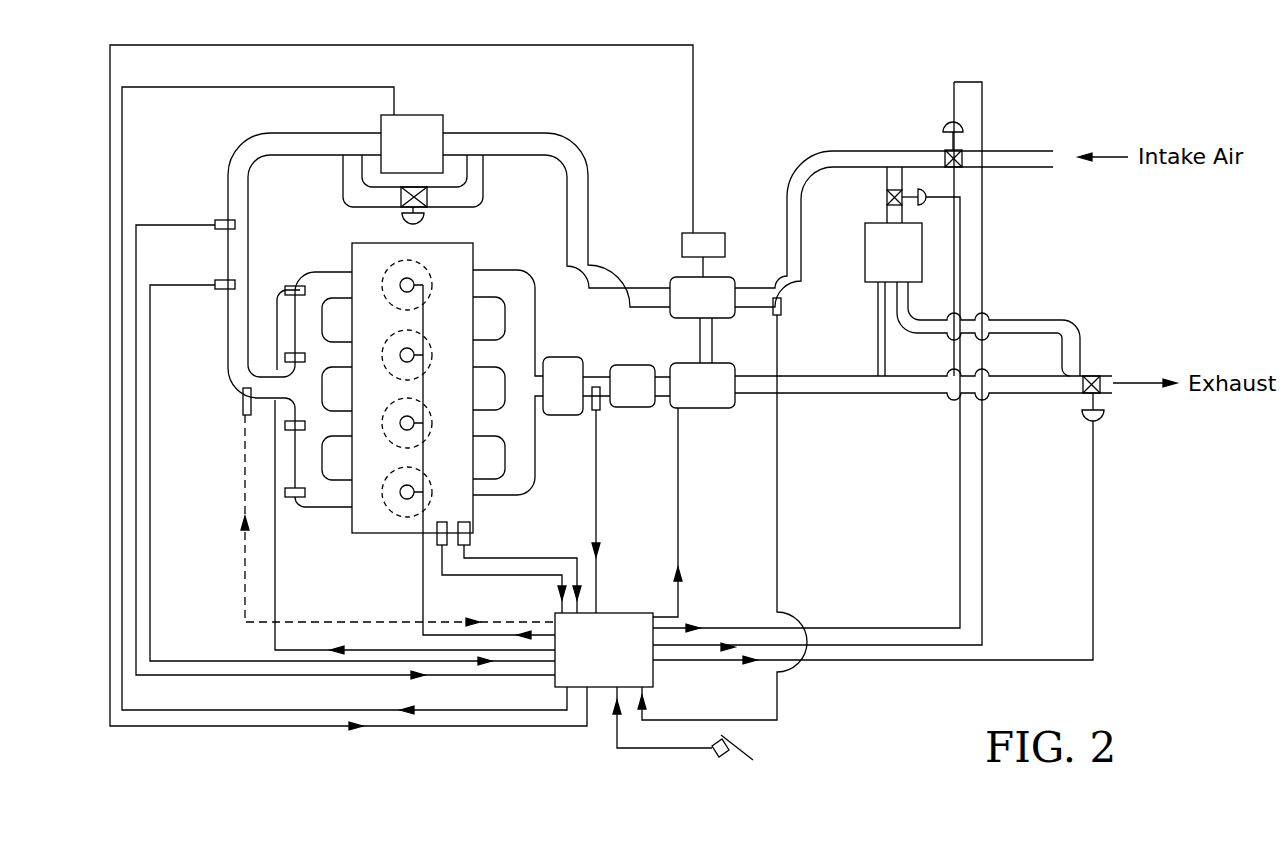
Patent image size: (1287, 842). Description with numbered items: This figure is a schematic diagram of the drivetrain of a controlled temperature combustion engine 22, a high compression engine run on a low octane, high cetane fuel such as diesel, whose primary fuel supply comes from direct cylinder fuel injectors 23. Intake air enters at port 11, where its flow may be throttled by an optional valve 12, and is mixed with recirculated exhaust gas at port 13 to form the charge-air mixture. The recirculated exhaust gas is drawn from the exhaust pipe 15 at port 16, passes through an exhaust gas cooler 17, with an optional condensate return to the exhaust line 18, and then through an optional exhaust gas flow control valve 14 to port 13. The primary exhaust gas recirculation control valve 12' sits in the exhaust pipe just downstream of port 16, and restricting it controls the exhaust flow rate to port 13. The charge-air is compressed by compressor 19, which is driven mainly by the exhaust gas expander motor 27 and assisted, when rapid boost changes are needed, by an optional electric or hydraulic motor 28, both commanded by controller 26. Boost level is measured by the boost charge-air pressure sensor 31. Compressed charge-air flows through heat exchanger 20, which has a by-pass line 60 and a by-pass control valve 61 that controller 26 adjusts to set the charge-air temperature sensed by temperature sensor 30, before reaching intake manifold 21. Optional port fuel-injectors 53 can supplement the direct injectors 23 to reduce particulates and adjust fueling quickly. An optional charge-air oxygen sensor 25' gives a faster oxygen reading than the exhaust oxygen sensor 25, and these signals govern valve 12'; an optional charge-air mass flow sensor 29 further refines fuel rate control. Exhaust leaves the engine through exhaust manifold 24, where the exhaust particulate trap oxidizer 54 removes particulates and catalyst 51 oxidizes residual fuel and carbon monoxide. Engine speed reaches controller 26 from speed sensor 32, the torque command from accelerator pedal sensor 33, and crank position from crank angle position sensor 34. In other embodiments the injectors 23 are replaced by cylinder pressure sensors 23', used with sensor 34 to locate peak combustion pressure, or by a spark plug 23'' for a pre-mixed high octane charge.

The intake air port 11 is at (1055, 152).
The throttle valve 12 is at (934, 103).
The exhaust gas recirculation control valve 12' is at (922, 528).
The mixing port 13 is at (895, 170).
The exhaust gas flow control valve 14 is at (933, 203).
The exhaust line 15 is at (1020, 393).
The exhaust port 16 is at (1080, 335).
The exhaust gas cooler 17 is at (867, 250).
The exhaust line 18 is at (880, 350).
The compressor 19 is at (685, 288).
The heat exchanger 20 is at (430, 115).
The intake manifold 21 is at (315, 282).
The controlled temperature combustion engine 22 is at (410, 535).
The direct cylinder fuel injectors 23 is at (423, 425).
The cylinder pressure sensors 23' is at (423, 425).
The spark plug 23'' is at (423, 425).
The exhaust manifold 24 is at (515, 293).
The exhaust oxygen sensor 25 is at (621, 500).
The charge-air oxygen sensor 25' is at (367, 507).
The controller 26 is at (622, 612).
The exhaust gas expander motor 27 is at (704, 408).
The electric or hydraulic motor 28 is at (685, 243).
The charge-air mass flow sensor 29 is at (783, 307).
The temperature sensor 30 is at (222, 289).
The boost charge-air pressure sensor 31 is at (224, 220).
The speed sensor 32 is at (497, 570).
The accelerator pedal sensor 33 is at (712, 752).
The crank angle position sensor 34 is at (470, 540).
The catalyst 51 is at (638, 382).
The port fuel-injectors 53 is at (295, 287).
The exhaust particulate trap oxidizer 54 is at (565, 373).
The by-pass line 60 is at (477, 180).
The by-pass control valve 61 is at (405, 218).